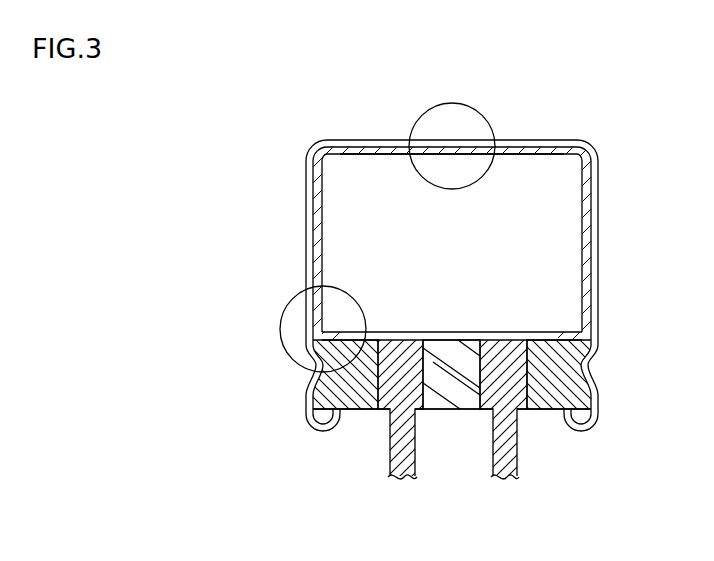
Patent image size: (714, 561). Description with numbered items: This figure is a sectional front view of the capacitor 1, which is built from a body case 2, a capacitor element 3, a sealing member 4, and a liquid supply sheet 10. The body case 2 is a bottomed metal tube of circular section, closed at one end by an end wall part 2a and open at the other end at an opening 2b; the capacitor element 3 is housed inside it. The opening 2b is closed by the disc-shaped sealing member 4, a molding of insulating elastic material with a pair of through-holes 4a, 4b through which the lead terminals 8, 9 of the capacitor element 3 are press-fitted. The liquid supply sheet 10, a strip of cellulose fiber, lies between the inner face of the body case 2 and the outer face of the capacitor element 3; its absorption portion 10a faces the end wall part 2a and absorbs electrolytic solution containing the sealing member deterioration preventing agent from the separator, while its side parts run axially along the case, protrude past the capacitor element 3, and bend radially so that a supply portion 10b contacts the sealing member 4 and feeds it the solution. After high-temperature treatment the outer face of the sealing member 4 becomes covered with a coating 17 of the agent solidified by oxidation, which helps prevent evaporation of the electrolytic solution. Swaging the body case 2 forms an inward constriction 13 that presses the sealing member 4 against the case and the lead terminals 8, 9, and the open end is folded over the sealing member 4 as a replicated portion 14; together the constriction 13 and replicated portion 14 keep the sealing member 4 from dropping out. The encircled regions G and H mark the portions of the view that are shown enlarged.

The capacitor 1 is at (565, 123).
The body case 2 is at (597, 182).
The end wall part 2a is at (340, 140).
The opening 2b is at (443, 413).
The capacitor element 3 is at (557, 274).
The sealing member 4 is at (577, 354).
The through-hole 4a is at (358, 410).
The through-hole 4b is at (547, 412).
The lead terminal 8 is at (390, 442).
The lead terminal 9 is at (516, 452).
The liquid supply sheet 10 is at (593, 240).
The absorption portion 10a is at (367, 157).
The supply portion 10b is at (567, 338).
The constriction 13 is at (588, 387).
The replicated portion 14 is at (595, 428).
The coating 17 is at (446, 414).
The enlarged region G is at (483, 118).
The enlarged region H is at (288, 304).